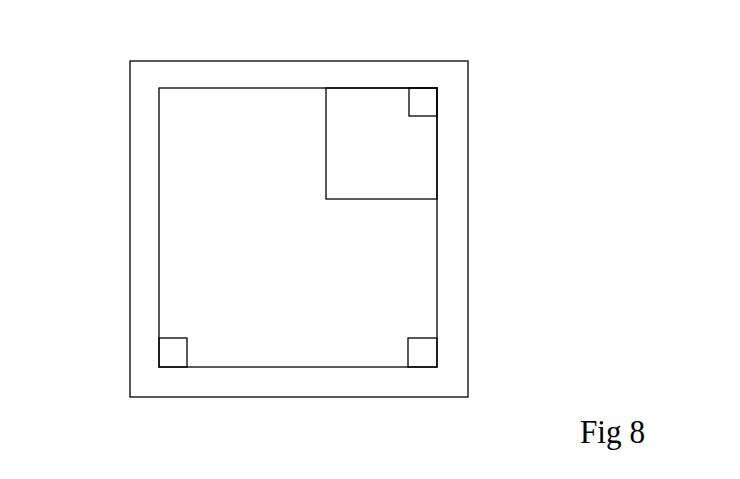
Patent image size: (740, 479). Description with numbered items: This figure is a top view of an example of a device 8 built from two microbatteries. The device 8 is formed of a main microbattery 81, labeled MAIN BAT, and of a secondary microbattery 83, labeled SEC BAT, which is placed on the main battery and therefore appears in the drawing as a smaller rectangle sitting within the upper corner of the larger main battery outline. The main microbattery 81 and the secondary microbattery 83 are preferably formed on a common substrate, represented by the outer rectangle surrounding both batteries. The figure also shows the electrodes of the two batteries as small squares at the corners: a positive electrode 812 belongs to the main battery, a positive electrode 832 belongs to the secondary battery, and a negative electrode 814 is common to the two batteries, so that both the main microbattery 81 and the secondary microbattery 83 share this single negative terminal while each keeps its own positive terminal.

The device 8 is at (512, 216).
The main microbattery 81 is at (198, 220).
The positive electrode of the main battery 812 is at (422, 352).
The negative electrode 814 is at (168, 352).
The secondary microbattery 83 is at (363, 110).
The positive electrode of the secondary battery 832 is at (425, 102).